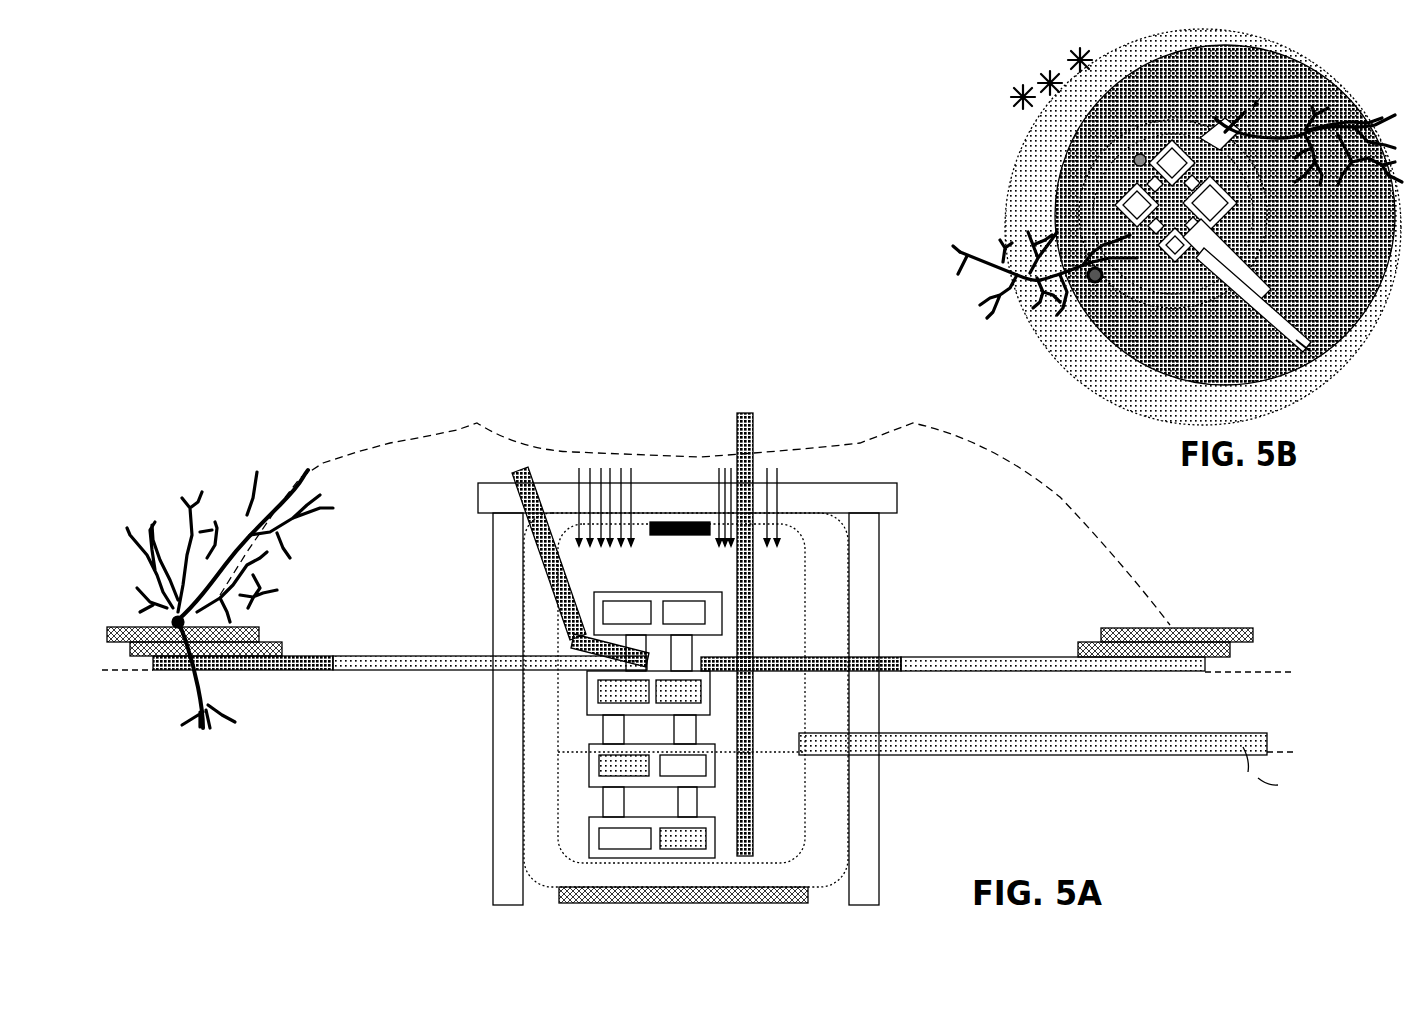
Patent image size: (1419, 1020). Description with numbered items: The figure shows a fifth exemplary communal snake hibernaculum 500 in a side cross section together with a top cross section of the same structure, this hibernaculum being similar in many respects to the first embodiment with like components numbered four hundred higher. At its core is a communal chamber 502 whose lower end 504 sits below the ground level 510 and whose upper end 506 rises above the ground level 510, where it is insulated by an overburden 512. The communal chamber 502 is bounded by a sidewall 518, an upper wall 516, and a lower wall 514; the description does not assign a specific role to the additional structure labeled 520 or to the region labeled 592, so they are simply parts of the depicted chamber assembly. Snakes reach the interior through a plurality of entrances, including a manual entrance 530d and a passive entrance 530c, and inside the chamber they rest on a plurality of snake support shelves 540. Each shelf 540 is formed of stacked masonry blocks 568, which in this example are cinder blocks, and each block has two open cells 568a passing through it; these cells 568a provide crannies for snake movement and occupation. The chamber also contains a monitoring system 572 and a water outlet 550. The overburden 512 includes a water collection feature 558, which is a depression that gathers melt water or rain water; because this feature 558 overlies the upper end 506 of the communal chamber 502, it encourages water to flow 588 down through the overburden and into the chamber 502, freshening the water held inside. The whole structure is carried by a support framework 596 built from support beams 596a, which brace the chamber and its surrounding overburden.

In FIG. 5A, the communal snake hibernaculum 500 is at (336, 390).
In FIG. 5B, the communal snake hibernaculum 500 is at (964, 110).
In FIG. 5A, the communal chamber 502 is at (582, 723).
In FIG. 5A, the lower end 504 is at (550, 850).
In FIG. 5A, the upper end 506 is at (810, 466).
In FIG. 5A, the ground level 510 is at (1280, 672).
In FIG. 5A, the overburden 512 is at (937, 450).
In FIG. 5A, the lower wall 514 is at (762, 862).
In FIG. 5A, the upper wall 516 is at (652, 495).
In FIG. 5A, the sidewall 518 is at (562, 817).
In FIG. 5A, the inner wall 520 is at (562, 742).
In FIG. 5A, the passive entrance 530c is at (537, 495).
In FIG. 5B, the passive entrance 530c is at (1245, 112).
In FIG. 5A, the manual entrance 530d is at (442, 657).
In FIG. 5B, the manual entrance 530d is at (1210, 253).
In FIG. 5A, the snake support shelf 540 is at (628, 593).
In FIG. 5B, the snake support shelf 540 is at (1137, 183).
In FIG. 5A, the water outlet 550 is at (1203, 747).
In FIG. 5B, the water outlet 550 is at (1273, 328).
In FIG. 5A, the water collection feature 558 is at (519, 408).
In FIG. 5A, the masonry block 568 is at (712, 606).
In FIG. 5A, the cell 568a is at (617, 692).
In FIG. 5B, the cell 568a is at (1212, 219).
In FIG. 5A, the monitoring system 572 is at (732, 424).
In FIG. 5B, the monitoring system 572 is at (1137, 158).
In FIG. 5A, the water flow 588 is at (777, 502).
In FIG. 5A, the base pad 592 is at (790, 890).
In FIG. 5A, the support framework 596 is at (893, 580).
In FIG. 5A, the support beam 596a is at (872, 590).